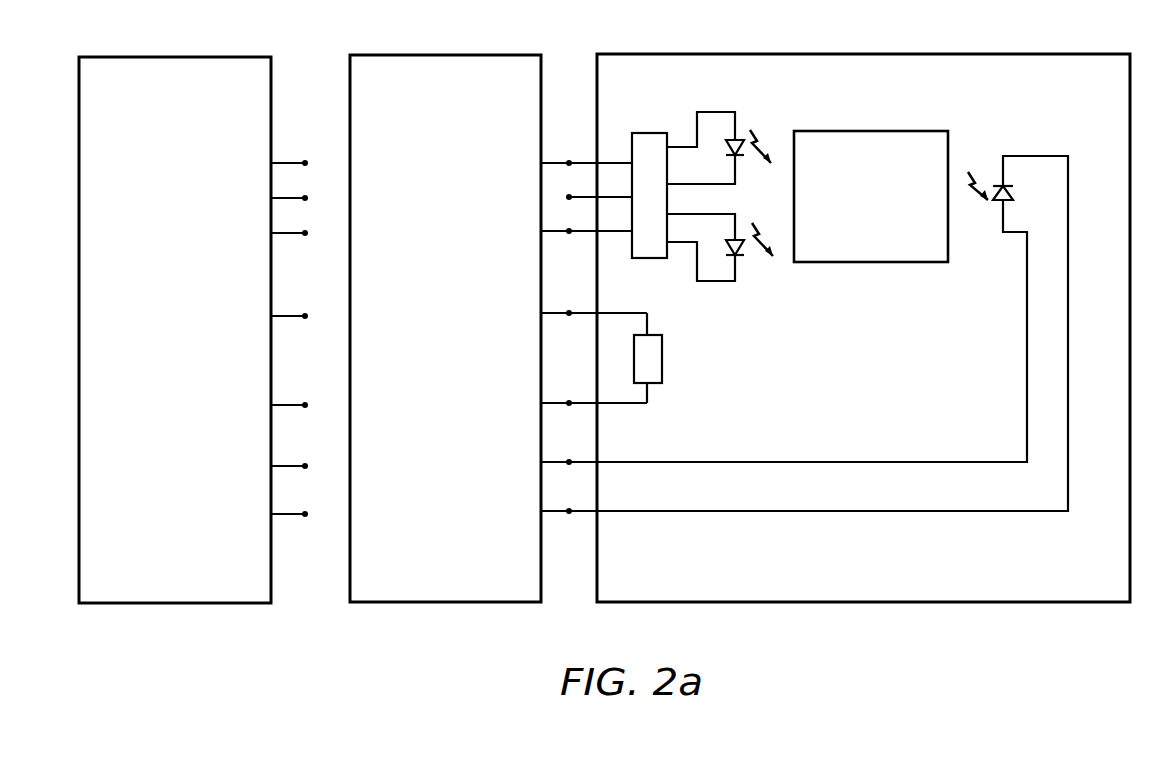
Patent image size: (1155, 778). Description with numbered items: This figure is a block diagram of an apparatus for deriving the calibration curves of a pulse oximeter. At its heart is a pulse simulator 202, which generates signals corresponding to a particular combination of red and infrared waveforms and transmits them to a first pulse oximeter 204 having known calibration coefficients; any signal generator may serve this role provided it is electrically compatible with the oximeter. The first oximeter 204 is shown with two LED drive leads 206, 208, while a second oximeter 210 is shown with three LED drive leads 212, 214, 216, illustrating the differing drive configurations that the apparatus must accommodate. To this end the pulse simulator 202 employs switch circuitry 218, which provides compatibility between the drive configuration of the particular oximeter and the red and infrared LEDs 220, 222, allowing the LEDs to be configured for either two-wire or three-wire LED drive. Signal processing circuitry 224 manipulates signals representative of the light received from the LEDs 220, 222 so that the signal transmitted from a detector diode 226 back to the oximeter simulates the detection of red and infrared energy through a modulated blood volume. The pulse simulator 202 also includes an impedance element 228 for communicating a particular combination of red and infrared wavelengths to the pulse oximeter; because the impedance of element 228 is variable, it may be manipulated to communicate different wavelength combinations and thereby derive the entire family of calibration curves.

The pulse simulator 202 is at (1092, 583).
The first pulse oximeter 204 is at (510, 580).
The LED drive lead 206 is at (556, 147).
The LED drive lead 208 is at (556, 213).
The second oximeter 210 is at (225, 580).
The LED drive lead 212 is at (306, 149).
The LED drive lead 214 is at (306, 185).
The LED drive lead 216 is at (306, 220).
The switch circuitry 218 is at (667, 169).
The red LED 220 is at (733, 140).
The infrared LED 222 is at (744, 258).
The signal processing circuitry 224 is at (871, 177).
The detector diode 226 is at (972, 151).
The impedance element 228 is at (683, 357).